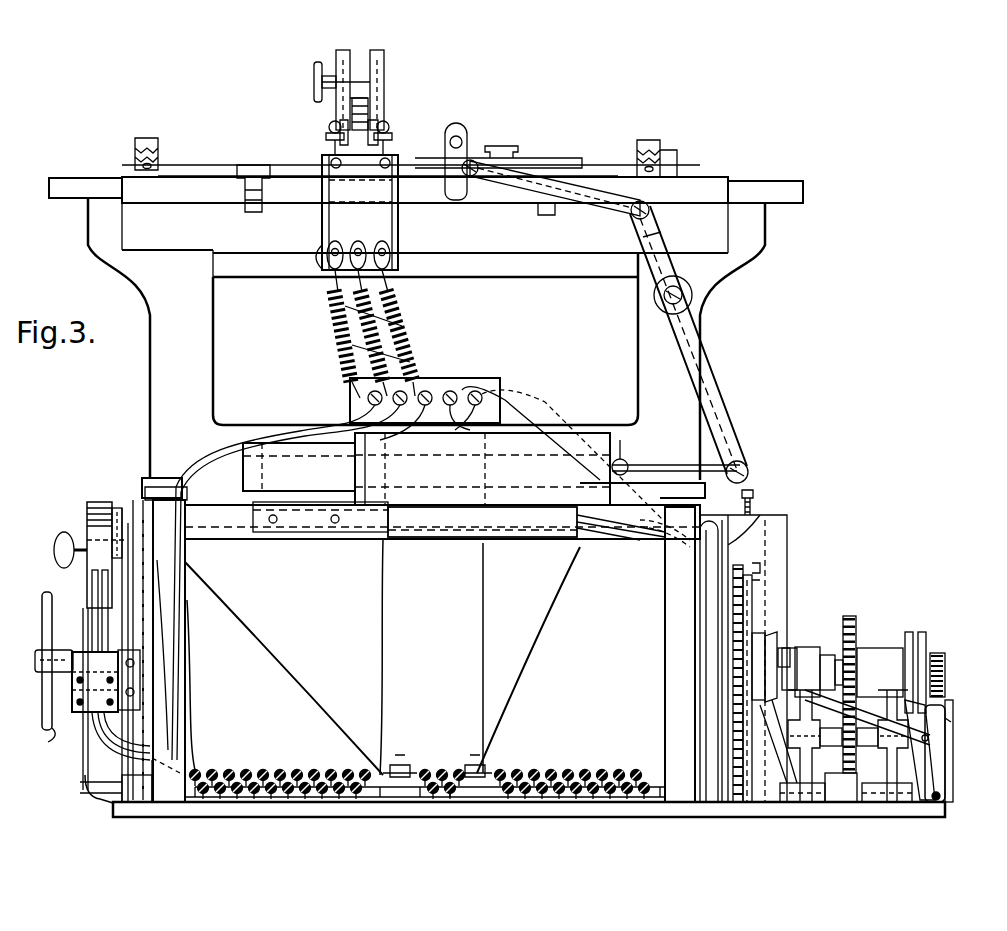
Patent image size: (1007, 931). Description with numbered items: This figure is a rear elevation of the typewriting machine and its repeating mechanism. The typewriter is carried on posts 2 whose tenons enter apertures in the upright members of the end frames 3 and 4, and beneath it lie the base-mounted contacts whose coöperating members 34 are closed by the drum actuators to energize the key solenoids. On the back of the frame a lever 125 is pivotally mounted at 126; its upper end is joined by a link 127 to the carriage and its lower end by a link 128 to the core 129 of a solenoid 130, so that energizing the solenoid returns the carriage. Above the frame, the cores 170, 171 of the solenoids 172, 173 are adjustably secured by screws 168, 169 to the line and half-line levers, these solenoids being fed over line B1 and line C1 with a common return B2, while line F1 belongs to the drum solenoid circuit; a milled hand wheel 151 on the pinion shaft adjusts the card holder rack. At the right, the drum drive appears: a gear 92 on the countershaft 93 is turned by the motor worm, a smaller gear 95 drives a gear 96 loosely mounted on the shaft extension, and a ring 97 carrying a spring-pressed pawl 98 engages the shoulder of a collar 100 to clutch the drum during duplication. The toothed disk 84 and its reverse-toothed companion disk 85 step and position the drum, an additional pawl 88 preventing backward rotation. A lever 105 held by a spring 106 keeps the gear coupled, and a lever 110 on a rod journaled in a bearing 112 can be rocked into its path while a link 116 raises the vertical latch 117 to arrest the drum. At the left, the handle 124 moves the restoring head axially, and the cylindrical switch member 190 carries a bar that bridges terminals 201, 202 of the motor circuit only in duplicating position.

The end frame 4 is at (150, 430).
The posts 2 is at (178, 724).
The end frame 3 is at (751, 533).
The coöperating contact members 34 is at (570, 772).
The toothed disk 84 is at (752, 600).
The companion disk 85 is at (745, 615).
The additional pawl 88 is at (752, 572).
The gear 92 is at (840, 658).
The countershaft 93 is at (816, 746).
The smaller gear 95 is at (862, 742).
The gear 96 is at (858, 660).
The ring 97 is at (768, 640).
The pawl 98 is at (786, 646).
The collar 100 is at (788, 655).
The lever 105 is at (935, 655).
The spring 106 is at (945, 680).
The lever 110 is at (945, 760).
The bearing 112 is at (940, 800).
The link 116 is at (912, 728).
The vertical latch 117 is at (785, 790).
The handle 124 is at (54, 674).
The lever 125 is at (706, 368).
The pivot 126 is at (678, 287).
The link 127 is at (580, 193).
The link 128 is at (668, 470).
The core 129 is at (624, 457).
The solenoid 130 is at (480, 441).
The milled hand wheel 151 is at (336, 73).
The screw 168 is at (390, 127).
The screw 169 is at (327, 130).
The core 170 is at (390, 312).
The core 171 is at (330, 303).
The solenoid 172 is at (398, 222).
The solenoid 173 is at (322, 220).
The cylindrical switch member 190 is at (95, 535).
The terminal 201 is at (93, 606).
The terminal 202 is at (105, 625).
The line B' B1 is at (400, 342).
The return B² B2 is at (412, 369).
The line C' C1 is at (350, 358).
The line F' F1 is at (642, 543).